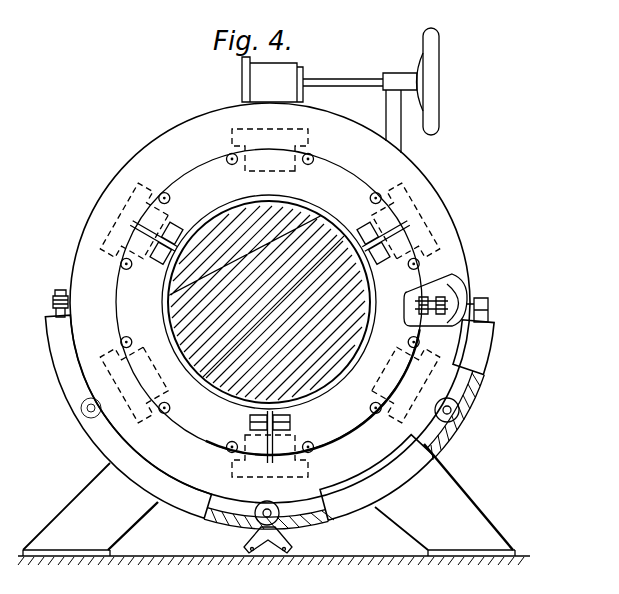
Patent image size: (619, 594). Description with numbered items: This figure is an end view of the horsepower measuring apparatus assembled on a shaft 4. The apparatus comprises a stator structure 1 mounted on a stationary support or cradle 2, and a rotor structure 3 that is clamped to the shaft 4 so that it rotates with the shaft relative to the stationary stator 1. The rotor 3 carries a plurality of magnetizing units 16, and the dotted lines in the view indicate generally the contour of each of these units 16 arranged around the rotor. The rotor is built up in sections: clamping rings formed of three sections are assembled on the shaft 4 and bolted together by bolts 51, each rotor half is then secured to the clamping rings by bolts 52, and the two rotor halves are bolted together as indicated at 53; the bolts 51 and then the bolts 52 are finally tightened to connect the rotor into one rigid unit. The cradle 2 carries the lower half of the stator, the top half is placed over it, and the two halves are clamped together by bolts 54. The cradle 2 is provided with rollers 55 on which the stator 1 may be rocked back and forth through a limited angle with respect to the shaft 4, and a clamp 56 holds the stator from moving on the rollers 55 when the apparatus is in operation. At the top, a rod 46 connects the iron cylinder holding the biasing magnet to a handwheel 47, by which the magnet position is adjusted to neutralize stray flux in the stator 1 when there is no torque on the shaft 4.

The stator structure 1 is at (432, 198).
The stationary support or cradle 2 is at (446, 484).
The rotor structure 3 is at (218, 181).
The shaft 4 is at (180, 298).
The magnetizing unit 16 is at (98, 219).
The rod 46 is at (341, 79).
The handwheel 47 is at (439, 80).
The bolts 51 is at (249, 421).
The bolts 52 is at (169, 195).
The rotor half bolting 53 is at (455, 280).
The bolts 54 is at (487, 294).
The rollers 55 is at (279, 508).
The clamp 56 is at (296, 546).